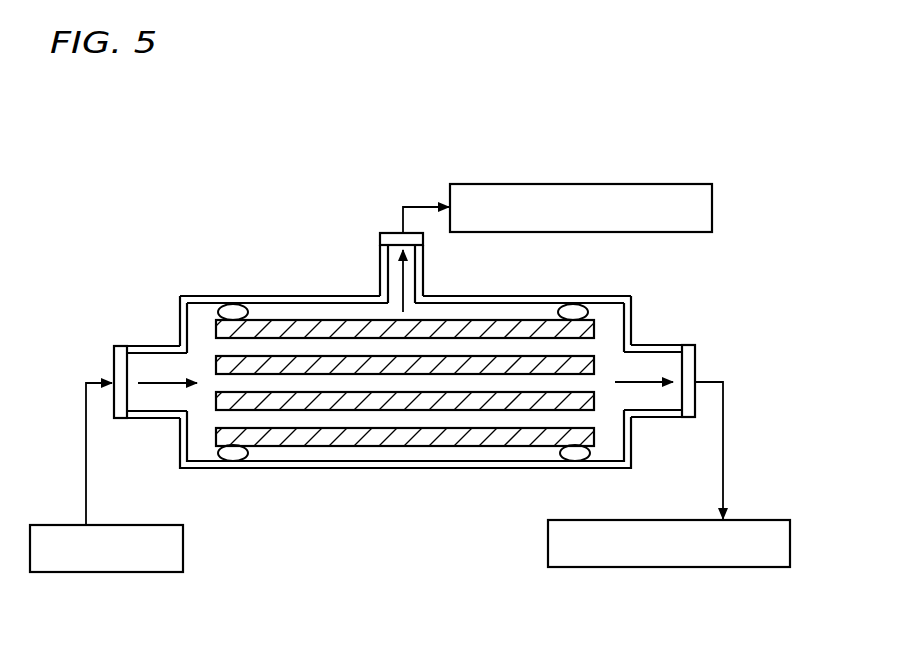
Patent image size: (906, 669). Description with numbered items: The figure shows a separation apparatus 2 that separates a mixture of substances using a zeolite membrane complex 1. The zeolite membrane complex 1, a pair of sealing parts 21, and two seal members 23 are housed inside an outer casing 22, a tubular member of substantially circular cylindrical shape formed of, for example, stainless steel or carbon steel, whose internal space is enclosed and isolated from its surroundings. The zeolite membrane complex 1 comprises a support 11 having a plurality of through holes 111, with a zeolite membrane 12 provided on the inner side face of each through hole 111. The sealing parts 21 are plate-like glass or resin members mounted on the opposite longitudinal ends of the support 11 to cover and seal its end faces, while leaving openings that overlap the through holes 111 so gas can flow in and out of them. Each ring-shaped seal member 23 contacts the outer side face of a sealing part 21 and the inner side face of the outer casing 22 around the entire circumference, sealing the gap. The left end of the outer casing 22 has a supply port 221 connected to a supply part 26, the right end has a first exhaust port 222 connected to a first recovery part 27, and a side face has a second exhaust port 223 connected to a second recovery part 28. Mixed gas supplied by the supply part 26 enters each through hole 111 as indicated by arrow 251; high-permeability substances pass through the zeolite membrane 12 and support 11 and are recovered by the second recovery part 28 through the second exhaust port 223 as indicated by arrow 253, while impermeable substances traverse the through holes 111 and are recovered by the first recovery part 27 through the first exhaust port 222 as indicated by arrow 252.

The zeolite membrane complex 1 is at (207, 448).
The separation apparatus 2 is at (139, 180).
The support 11 is at (477, 443).
The zeolite membrane 12 is at (385, 373).
The through hole 111 is at (282, 386).
The sealing part 21 is at (215, 333).
The outer casing 22 is at (497, 296).
The seal member 23 is at (232, 305).
The supply part 26 is at (183, 548).
The first recovery part 27 is at (547, 545).
The second recovery part 28 is at (712, 207).
The supply port 221 is at (140, 358).
The first exhaust port 222 is at (665, 348).
The second exhaust port 223 is at (389, 256).
The arrow 251 is at (150, 389).
The arrow 252 is at (648, 385).
The arrow 253 is at (400, 283).